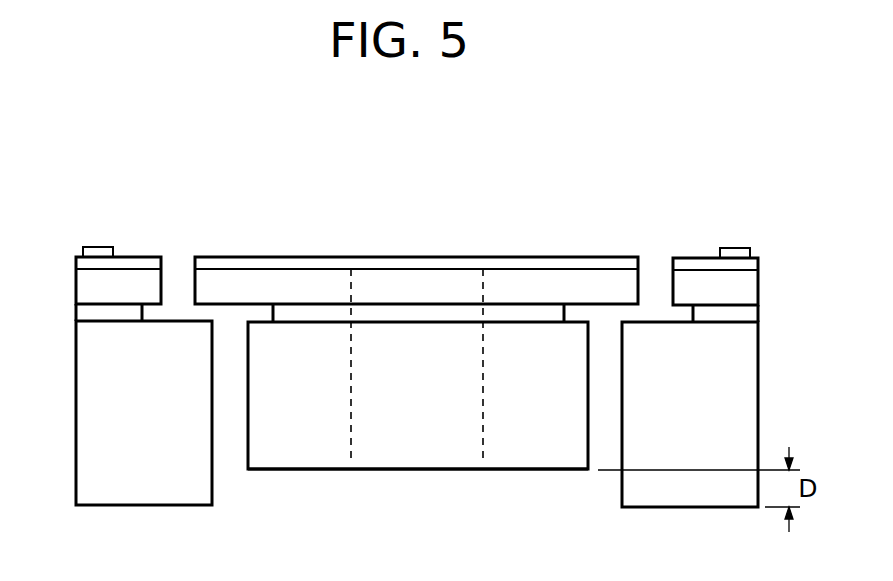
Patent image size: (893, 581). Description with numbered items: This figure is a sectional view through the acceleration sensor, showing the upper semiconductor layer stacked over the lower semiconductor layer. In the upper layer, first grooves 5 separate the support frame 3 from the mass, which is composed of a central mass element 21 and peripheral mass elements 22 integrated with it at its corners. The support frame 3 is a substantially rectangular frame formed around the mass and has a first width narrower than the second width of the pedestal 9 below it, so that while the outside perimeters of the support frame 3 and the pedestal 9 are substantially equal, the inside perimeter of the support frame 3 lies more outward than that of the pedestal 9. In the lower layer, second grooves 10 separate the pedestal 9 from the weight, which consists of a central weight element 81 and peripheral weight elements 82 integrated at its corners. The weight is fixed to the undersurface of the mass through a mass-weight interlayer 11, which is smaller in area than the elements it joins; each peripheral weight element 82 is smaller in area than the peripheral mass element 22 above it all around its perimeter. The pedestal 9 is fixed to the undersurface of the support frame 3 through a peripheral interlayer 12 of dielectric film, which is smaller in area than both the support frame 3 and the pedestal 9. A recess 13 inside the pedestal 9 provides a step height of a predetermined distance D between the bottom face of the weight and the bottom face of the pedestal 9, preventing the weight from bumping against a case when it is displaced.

The support frame 3 is at (85, 283).
The first grooves 5 is at (180, 272).
The pedestal 9 is at (85, 420).
The second grooves 10 is at (230, 468).
The mass-weight interlayer 11 is at (326, 308).
The peripheral interlayer 12 is at (85, 316).
The recess 13 is at (367, 487).
The central mass element 21 is at (418, 276).
The peripheral mass elements 22 is at (265, 276).
The central weight element 81 is at (421, 455).
The peripheral weight elements 82 is at (303, 455).